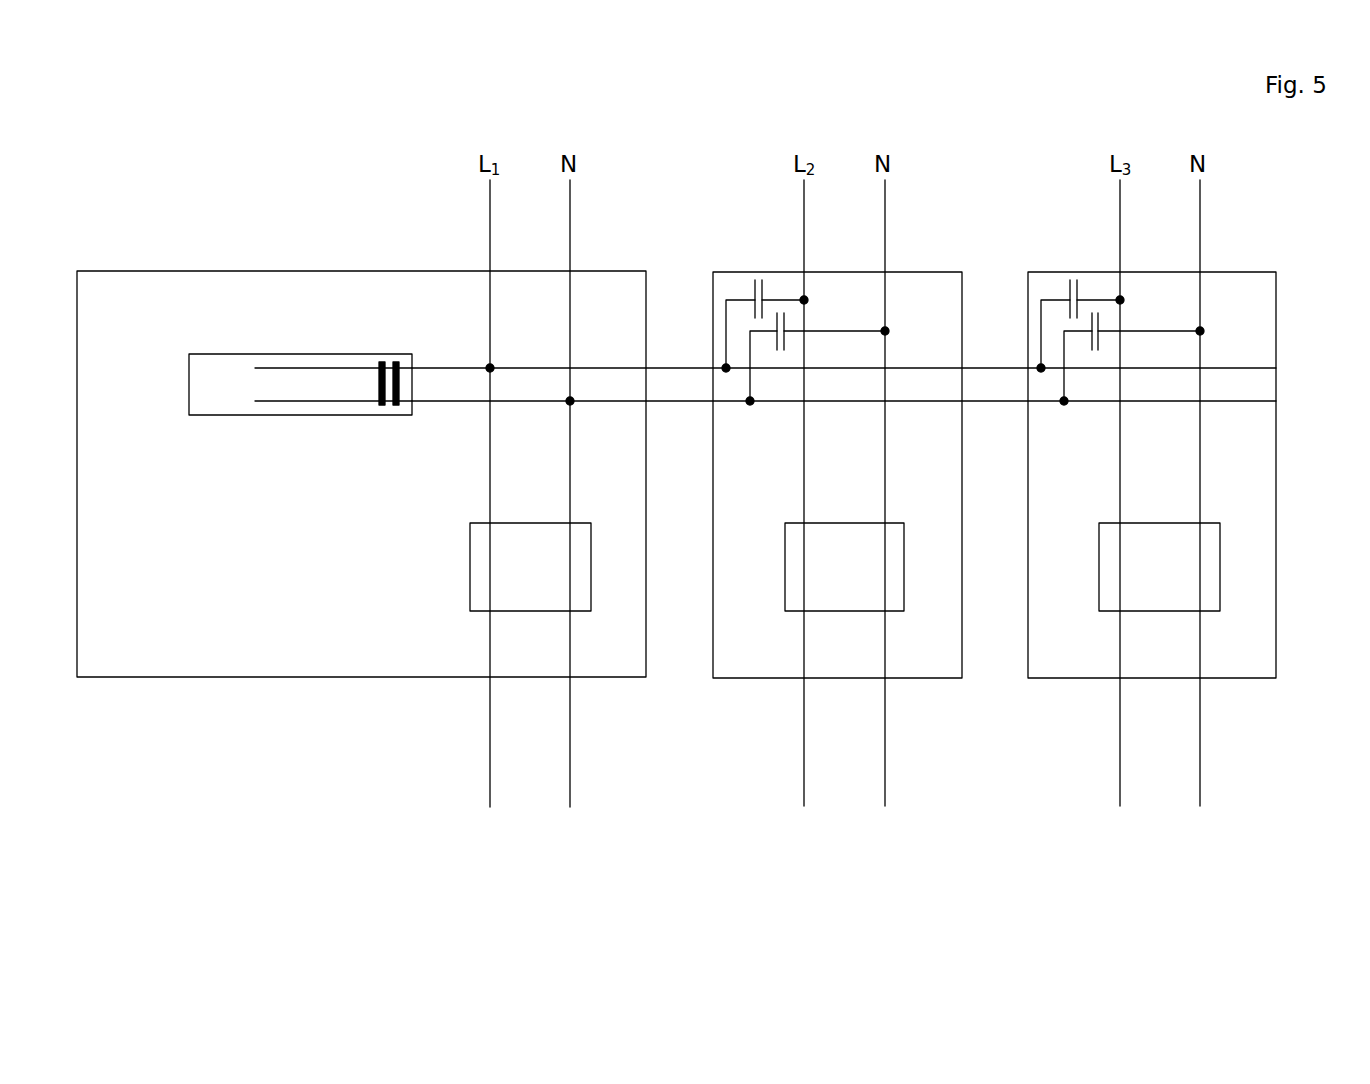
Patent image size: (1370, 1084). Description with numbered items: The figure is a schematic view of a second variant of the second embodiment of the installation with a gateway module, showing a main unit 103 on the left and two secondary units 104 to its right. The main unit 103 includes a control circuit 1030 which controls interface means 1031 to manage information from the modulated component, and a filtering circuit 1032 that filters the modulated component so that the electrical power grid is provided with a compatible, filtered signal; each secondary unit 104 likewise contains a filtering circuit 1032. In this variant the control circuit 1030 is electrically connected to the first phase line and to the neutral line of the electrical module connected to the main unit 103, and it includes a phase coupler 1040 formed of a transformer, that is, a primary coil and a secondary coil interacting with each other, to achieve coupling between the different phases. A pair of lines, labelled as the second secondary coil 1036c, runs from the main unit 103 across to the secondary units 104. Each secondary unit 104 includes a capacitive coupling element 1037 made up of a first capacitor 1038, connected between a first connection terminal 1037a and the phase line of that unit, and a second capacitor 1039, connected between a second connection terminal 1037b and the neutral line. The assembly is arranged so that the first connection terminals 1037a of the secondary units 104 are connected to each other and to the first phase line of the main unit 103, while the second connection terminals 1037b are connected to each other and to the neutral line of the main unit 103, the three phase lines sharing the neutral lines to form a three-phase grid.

The main unit 103 is at (262, 271).
The secondary unit 104 is at (937, 272).
The control circuit 1030 is at (229, 424).
The interface means 1031 is at (450, 312).
The filtering circuit 1032 is at (476, 595).
The second secondary coil 1036c is at (451, 432).
The capacitive coupling element 1037 is at (768, 262).
The first connection terminal 1037a is at (724, 370).
The second connection terminal 1037b is at (750, 404).
The first capacitor 1038 is at (752, 290).
The second capacitor 1039 is at (787, 322).
The phase coupler 1040 is at (387, 416).